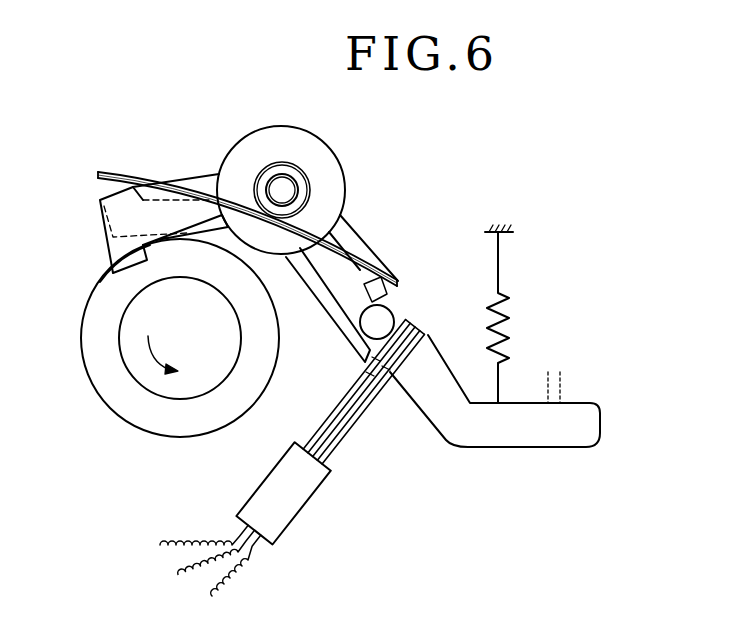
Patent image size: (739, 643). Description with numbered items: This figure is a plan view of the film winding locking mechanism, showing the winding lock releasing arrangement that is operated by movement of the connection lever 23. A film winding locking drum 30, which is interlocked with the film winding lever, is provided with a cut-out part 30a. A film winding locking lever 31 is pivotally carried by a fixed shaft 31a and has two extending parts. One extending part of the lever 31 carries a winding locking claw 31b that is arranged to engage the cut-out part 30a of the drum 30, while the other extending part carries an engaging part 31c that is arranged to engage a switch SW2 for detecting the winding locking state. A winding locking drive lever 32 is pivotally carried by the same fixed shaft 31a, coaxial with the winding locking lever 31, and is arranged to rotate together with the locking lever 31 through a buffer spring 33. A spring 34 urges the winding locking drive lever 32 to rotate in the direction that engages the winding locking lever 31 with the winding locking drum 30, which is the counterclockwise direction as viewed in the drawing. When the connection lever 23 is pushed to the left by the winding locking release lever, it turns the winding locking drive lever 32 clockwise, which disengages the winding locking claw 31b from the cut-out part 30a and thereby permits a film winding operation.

The film winding locking drum 30 is at (112, 388).
The cut-out part 30a is at (117, 268).
The film winding locking lever 31 is at (328, 203).
The fixed shaft 31a is at (253, 178).
The winding locking claw 31b is at (113, 255).
The engaging part 31c is at (385, 320).
The winding locking drive lever 32 is at (515, 432).
The buffer spring 33 is at (107, 175).
The spring 34 is at (499, 262).
The connection lever 23 is at (561, 395).
The switch SW2 is at (300, 510).